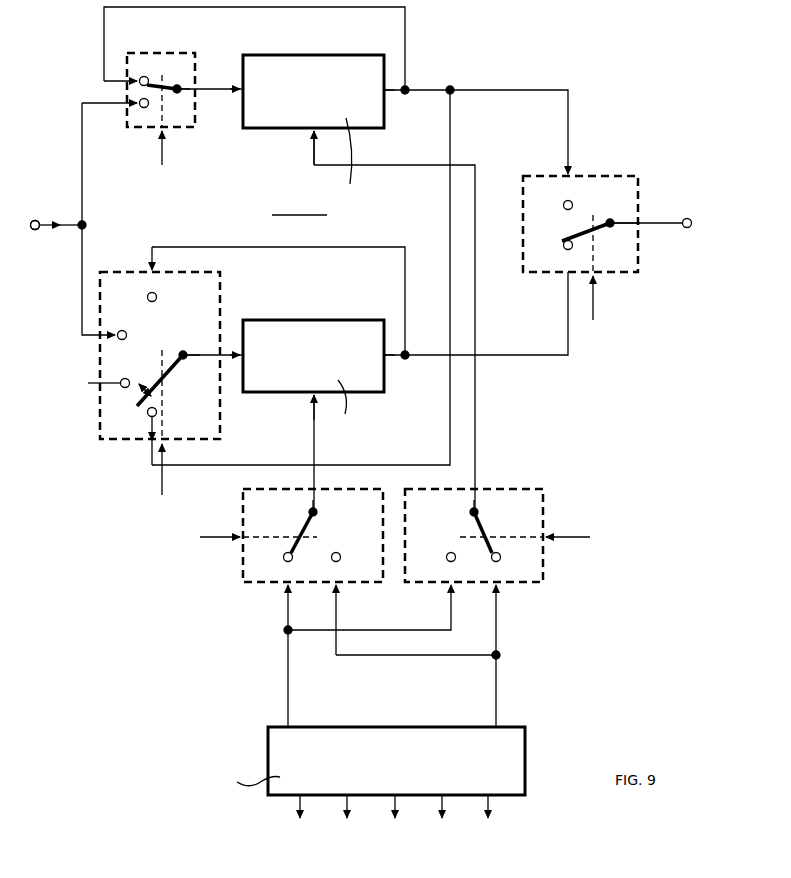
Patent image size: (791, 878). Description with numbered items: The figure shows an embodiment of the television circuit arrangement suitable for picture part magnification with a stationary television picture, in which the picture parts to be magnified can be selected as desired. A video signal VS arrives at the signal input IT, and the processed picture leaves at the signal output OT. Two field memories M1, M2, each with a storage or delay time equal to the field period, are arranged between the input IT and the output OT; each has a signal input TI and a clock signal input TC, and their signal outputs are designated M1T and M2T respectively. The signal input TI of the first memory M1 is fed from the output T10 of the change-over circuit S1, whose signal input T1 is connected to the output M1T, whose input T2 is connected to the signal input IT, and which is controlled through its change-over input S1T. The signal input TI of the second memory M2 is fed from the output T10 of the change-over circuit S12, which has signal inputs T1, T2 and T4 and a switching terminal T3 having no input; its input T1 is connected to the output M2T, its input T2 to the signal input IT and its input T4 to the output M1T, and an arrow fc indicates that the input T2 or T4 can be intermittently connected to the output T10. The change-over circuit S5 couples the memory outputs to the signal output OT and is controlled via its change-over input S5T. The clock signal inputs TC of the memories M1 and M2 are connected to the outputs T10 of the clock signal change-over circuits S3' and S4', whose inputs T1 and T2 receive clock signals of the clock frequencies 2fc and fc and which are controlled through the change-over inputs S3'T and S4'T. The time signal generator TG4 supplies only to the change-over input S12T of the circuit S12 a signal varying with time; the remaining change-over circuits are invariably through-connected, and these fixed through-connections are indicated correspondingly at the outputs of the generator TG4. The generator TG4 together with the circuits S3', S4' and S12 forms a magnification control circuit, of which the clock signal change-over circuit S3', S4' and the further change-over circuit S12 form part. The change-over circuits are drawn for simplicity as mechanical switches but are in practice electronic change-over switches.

The field memory M1 is at (288, 55).
The field memory M2 is at (300, 320).
The change-over circuit S1 is at (188, 127).
The change-over circuit S12 is at (100, 434).
The change-over circuit S5 is at (640, 273).
The change-over circuit S4' is at (283, 542).
The change-over circuit S3' is at (494, 542).
The time signal generator TG4 is at (378, 726).
The signal input T1 is at (137, 74).
The signal input T2 is at (138, 107).
The switching terminal T3 is at (96, 385).
The signal input T4 is at (150, 442).
The signal output T10 is at (177, 84).
The signal input TI is at (238, 87).
The clock signal input TC is at (310, 136).
The signal output M1T is at (386, 95).
The signal output M2T is at (388, 358).
The change-over input S1T is at (160, 131).
The change-over input S12T is at (165, 447).
The change-over input S5T is at (595, 272).
The change-over input S4'T is at (322, 692).
The change-over input S3'T is at (487, 692).
The clock frequency fc is at (147, 405).
The clock frequency 2fc is at (288, 741).
The video signal VS is at (57, 222).
The signal input IT is at (38, 230).
The signal output OT is at (690, 218).